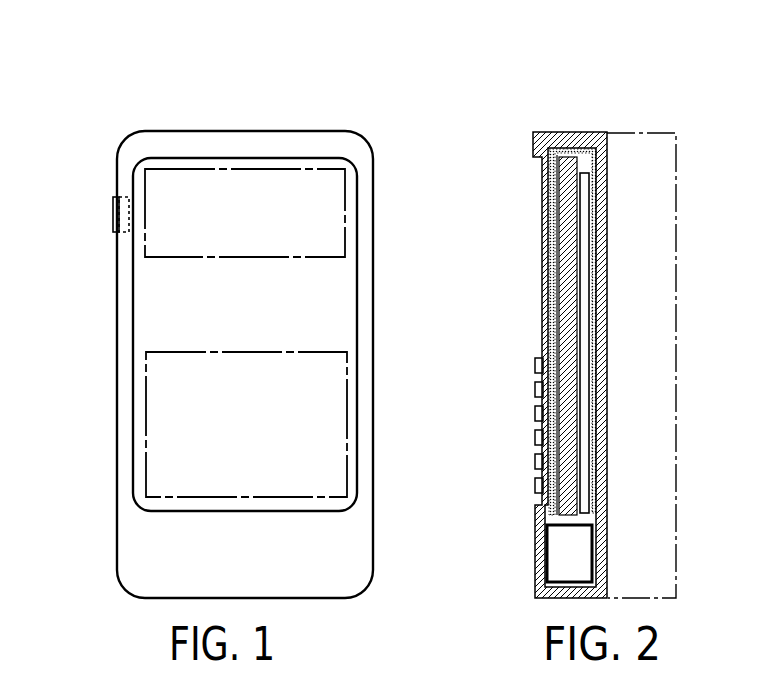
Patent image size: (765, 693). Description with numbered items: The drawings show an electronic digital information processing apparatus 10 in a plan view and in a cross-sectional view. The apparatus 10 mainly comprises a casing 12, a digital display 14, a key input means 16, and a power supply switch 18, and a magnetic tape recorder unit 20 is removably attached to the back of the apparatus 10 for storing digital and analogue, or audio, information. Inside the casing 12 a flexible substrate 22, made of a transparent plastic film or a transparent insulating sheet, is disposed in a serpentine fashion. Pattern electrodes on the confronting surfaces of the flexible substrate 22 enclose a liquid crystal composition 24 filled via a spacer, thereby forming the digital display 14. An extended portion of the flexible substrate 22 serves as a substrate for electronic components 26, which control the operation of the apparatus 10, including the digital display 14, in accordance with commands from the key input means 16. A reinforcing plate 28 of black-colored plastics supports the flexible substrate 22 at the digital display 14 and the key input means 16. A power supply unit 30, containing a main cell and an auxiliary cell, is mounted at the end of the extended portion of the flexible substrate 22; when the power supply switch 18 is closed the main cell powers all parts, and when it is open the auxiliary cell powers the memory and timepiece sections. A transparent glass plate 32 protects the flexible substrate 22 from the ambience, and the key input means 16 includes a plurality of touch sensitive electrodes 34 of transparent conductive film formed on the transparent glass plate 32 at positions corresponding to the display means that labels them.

In FIG. 1, the electronic digital information processing apparatus 10 is at (318, 116).
In FIG. 2, the electronic digital information processing apparatus 10 is at (554, 107).
In FIG. 2, the casing 12 is at (533, 137).
In FIG. 1, the digital display 14 is at (205, 188).
In FIG. 1, the key input means 16 is at (165, 400).
In FIG. 2, the key input means 16 is at (537, 488).
In FIG. 1, the power supply switch 18 is at (113, 217).
In FIG. 2, the magnetic tape recorder unit 20 is at (665, 243).
In FIG. 2, the flexible substrate 22 is at (552, 226).
In FIG. 2, the liquid crystal composition 24 is at (550, 283).
In FIG. 2, the electronic components 26 is at (587, 502).
In FIG. 2, the reinforcing plate 28 is at (583, 325).
In FIG. 2, the power supply unit 30 is at (578, 560).
In FIG. 2, the transparent glass plate 32 is at (548, 317).
In FIG. 2, the touch sensitive electrodes 34 is at (537, 455).